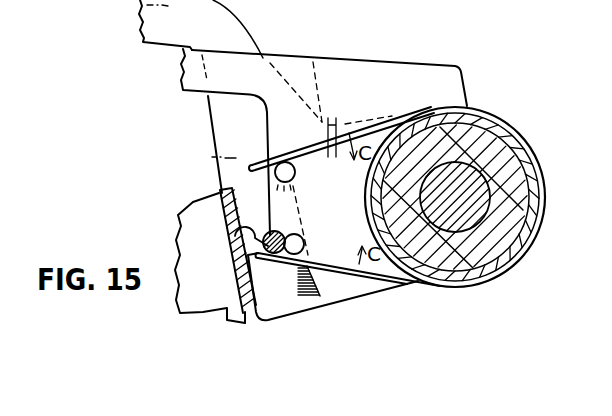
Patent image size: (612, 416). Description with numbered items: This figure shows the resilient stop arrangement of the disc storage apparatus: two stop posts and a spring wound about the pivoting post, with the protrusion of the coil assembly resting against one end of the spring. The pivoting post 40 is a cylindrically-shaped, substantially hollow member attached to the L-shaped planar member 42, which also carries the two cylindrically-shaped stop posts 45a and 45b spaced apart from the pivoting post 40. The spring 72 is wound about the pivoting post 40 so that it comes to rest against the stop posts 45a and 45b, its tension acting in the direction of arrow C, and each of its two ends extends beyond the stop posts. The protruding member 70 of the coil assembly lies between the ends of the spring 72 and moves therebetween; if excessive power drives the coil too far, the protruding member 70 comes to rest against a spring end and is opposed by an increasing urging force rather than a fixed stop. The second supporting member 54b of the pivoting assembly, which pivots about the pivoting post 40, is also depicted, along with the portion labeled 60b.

The frame portion 60b is at (142, 42).
The planar member 42 is at (245, 60).
The spring 72 is at (340, 127).
The pivoting post 40 is at (498, 127).
The stop post 45a is at (295, 173).
The stop post 45b is at (304, 245).
The protruding member 70 is at (230, 234).
The second supporting member 54b is at (353, 295).